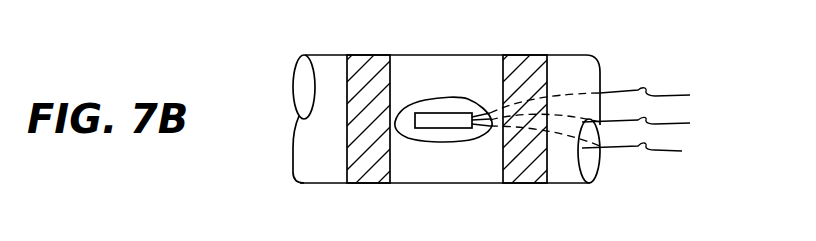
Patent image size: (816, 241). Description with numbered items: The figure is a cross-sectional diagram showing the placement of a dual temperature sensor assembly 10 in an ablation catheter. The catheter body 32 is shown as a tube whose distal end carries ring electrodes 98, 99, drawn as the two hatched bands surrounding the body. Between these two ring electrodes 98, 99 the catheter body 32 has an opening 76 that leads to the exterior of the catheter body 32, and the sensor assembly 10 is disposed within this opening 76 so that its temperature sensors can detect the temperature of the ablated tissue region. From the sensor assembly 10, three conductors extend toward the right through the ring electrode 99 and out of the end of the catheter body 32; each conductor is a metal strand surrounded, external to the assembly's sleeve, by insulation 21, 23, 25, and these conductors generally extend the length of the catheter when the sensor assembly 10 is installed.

The sensor assembly 10 is at (431, 137).
The insulation 21 is at (609, 97).
The insulation 23 is at (612, 125).
The insulation 25 is at (607, 148).
The catheter body 32 is at (580, 183).
The opening 76 is at (440, 101).
The ring electrode 98 is at (348, 172).
The ring electrode 99 is at (531, 172).